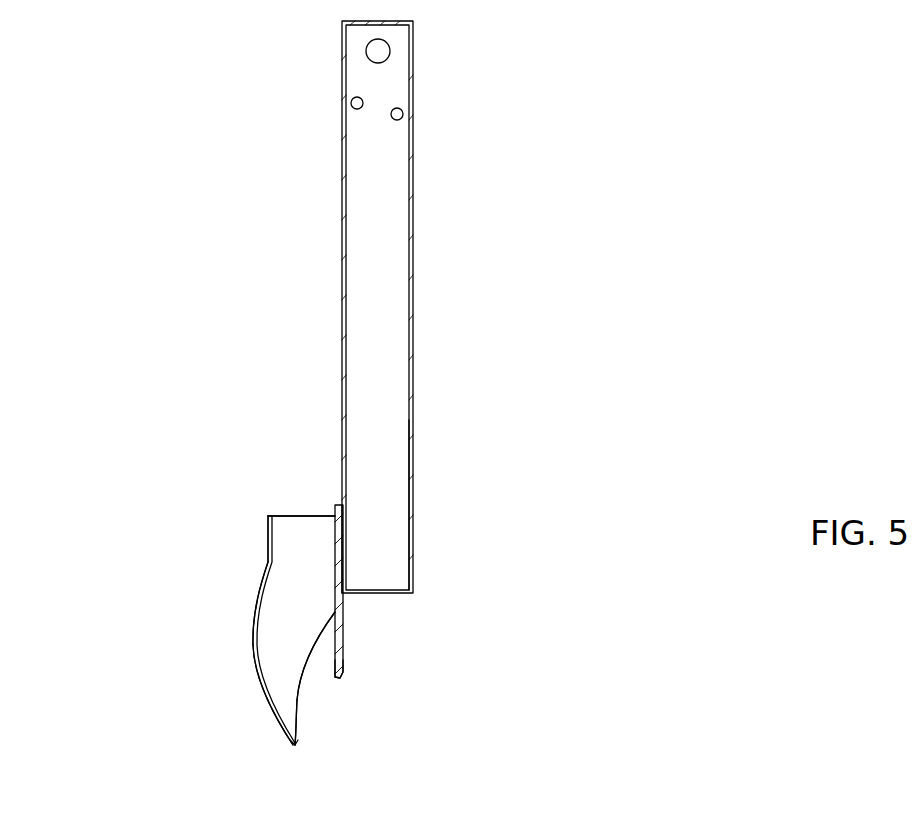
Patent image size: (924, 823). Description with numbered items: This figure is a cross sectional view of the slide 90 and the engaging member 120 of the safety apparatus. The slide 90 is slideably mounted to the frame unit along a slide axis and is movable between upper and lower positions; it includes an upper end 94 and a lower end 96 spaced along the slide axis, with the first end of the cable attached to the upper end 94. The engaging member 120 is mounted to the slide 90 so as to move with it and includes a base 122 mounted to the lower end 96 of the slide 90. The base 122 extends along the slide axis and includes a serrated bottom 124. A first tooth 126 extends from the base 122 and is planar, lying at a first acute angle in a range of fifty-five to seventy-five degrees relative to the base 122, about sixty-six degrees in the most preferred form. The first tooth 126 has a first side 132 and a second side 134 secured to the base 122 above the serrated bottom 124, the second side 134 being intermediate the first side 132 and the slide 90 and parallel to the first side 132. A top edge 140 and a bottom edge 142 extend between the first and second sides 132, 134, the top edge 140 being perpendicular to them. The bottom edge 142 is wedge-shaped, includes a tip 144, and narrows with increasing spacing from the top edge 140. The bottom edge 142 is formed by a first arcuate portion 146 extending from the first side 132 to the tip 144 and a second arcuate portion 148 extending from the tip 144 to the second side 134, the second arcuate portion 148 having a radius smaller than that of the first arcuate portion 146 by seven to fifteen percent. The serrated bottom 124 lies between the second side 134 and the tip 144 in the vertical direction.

The slide 90 is at (409, 199).
The upper end 94 is at (413, 57).
The lower end 96 is at (413, 499).
The engaging member 120 is at (250, 608).
The base 122 is at (338, 574).
The serrated bottom 124 is at (340, 678).
The first tooth 126 is at (258, 583).
The first side 132 is at (268, 533).
The second side 134 is at (338, 547).
The top edge 140 is at (303, 515).
The bottom edge 142 is at (280, 678).
The tip 144 is at (293, 747).
The first arcuate portion 146 is at (252, 657).
The second arcuate portion 148 is at (307, 655).